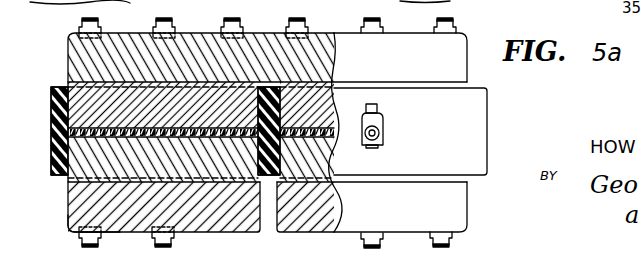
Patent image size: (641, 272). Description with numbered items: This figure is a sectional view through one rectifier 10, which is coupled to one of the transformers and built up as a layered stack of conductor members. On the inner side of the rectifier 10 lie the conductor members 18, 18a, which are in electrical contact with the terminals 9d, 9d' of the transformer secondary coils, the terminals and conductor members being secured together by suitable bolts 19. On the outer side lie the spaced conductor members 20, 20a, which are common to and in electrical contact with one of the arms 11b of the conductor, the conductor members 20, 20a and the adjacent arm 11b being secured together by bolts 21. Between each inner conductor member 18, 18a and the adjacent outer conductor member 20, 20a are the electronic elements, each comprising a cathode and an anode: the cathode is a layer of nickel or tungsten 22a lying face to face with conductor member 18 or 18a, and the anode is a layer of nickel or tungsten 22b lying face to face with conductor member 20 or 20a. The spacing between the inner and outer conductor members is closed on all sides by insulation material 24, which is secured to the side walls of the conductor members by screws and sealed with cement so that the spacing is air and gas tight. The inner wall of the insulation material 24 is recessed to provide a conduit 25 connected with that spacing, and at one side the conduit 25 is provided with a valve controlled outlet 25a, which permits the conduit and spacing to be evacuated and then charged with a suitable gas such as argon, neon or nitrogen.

The conductor member 20 is at (68, 64).
The conductor member 20a is at (318, 100).
The bolts 21 is at (437, 18).
The cathode layer 22a is at (328, 147).
The anode layer 22b is at (332, 106).
The insulation material 24 is at (50, 89).
The conduit 25 is at (51, 140).
The valve controlled outlet 25a is at (414, 125).
The conductor member 18 is at (73, 177).
The conductor member 18a is at (318, 175).
The bolts 19 is at (384, 236).
The terminal 9d is at (74, 223).
The terminal 9d' is at (421, 207).
The rectifier 10 is at (455, 159).
The arm 11b is at (463, 67).